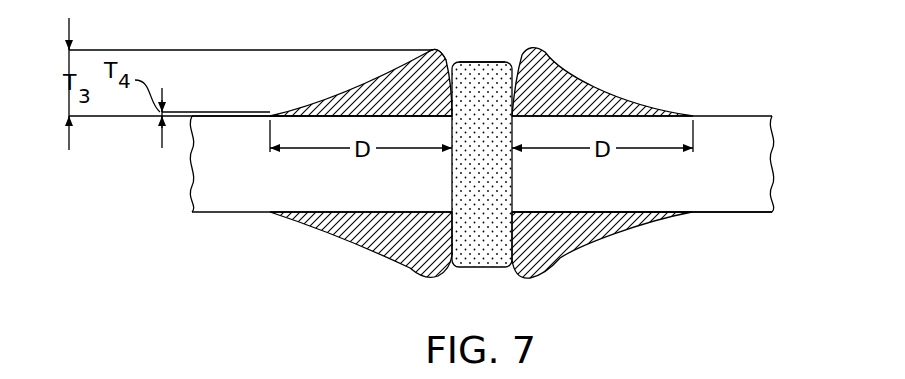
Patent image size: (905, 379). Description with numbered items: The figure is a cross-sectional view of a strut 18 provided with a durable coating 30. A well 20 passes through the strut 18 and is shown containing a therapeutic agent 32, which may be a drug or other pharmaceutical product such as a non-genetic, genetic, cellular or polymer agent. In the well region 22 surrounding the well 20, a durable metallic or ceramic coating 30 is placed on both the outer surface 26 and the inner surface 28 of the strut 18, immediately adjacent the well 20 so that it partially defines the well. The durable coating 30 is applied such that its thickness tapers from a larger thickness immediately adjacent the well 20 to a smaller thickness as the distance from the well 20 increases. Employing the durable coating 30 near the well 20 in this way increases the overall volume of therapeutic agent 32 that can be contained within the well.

The strut 18 is at (757, 162).
The well 20 is at (460, 170).
The well region 22 is at (444, 52).
The outer surface 26 is at (742, 116).
The bottom surface of workpiece 28 is at (741, 212).
The durable coating 30 is at (377, 90).
The therapeutic agent 32 is at (478, 62).